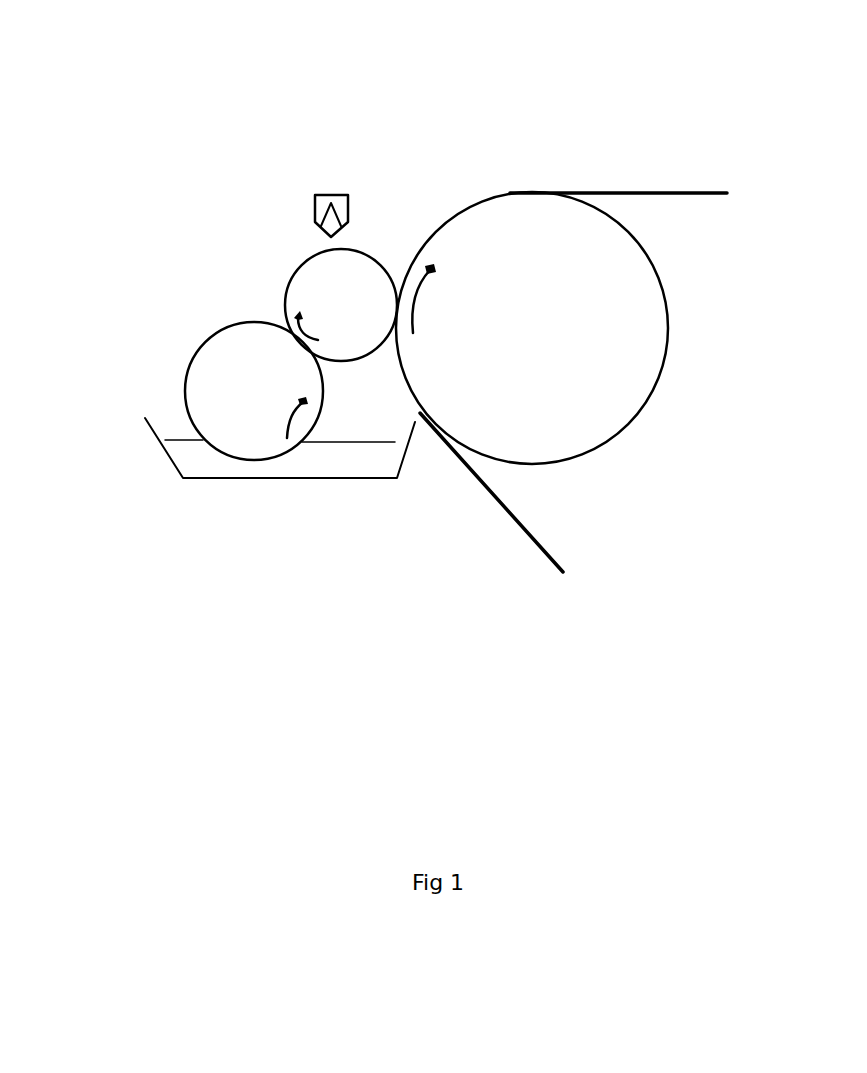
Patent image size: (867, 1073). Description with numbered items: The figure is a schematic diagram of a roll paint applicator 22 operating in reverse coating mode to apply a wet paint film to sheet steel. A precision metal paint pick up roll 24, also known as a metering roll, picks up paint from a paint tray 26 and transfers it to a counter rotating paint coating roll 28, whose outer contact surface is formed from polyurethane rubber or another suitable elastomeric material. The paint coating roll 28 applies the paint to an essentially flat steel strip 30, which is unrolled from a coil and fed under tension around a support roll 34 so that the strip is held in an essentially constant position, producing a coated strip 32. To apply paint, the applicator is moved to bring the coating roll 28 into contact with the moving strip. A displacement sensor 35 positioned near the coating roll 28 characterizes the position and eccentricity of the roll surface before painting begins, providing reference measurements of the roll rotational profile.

The roll paint applicator 22 is at (487, 133).
The paint pick up roll 24 is at (198, 385).
The paint tray 26 is at (368, 463).
The paint coating roll 28 is at (345, 270).
The steel strip 30 is at (537, 545).
The coated strip 32 is at (645, 195).
The support roll 34 is at (592, 410).
The displacement sensor 35 is at (327, 187).